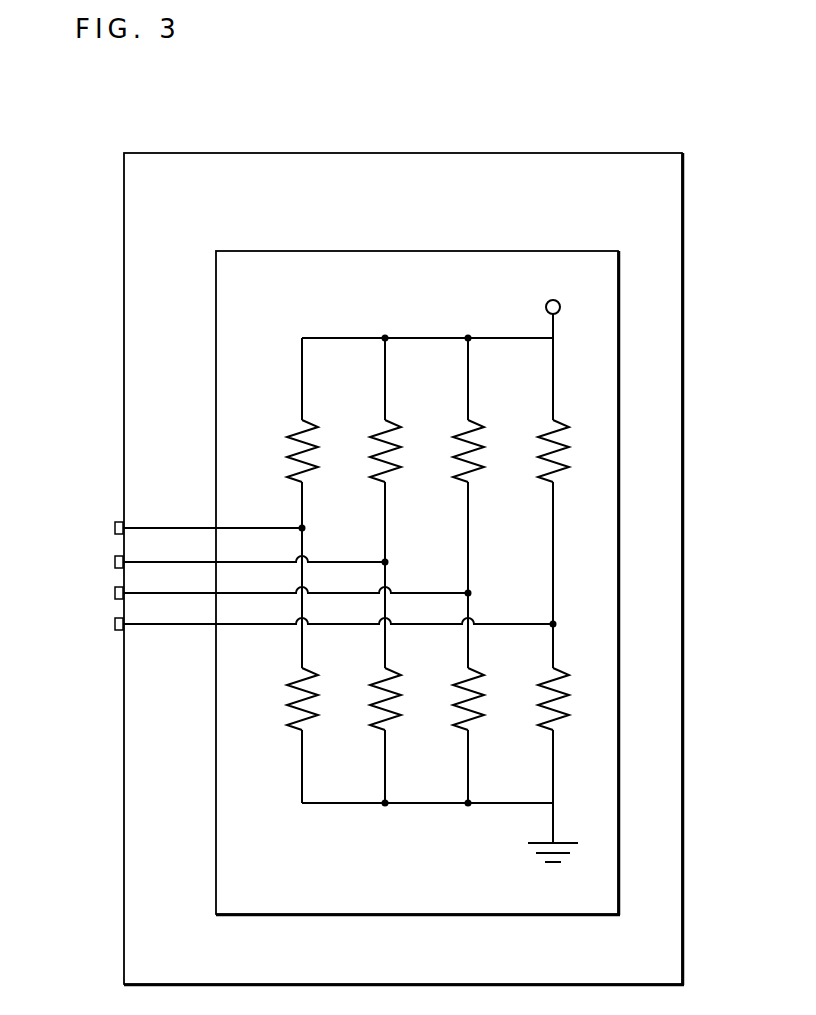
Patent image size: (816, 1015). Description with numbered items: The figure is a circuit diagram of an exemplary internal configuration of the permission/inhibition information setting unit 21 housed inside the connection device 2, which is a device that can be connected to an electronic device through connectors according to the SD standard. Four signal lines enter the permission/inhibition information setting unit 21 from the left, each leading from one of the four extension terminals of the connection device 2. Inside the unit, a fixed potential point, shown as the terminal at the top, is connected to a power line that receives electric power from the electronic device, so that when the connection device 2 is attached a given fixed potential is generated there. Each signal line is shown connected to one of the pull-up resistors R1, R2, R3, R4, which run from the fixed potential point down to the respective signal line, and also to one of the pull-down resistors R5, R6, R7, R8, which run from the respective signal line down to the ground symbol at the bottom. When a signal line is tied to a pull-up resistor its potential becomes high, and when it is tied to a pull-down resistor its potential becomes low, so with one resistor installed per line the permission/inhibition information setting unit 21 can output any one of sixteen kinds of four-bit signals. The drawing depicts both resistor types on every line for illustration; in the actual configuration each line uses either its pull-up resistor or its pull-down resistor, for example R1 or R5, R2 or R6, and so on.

The connection device 2 is at (593, 153).
The permission/inhibition information setting unit 21 is at (447, 251).
The pull-up resistor R1 is at (295, 424).
The pull-up resistor R2 is at (378, 424).
The pull-up resistor R3 is at (461, 424).
The pull-up resistor R4 is at (546, 424).
The pull-down resistor R5 is at (295, 735).
The pull-down resistor R6 is at (378, 735).
The pull-down resistor R7 is at (461, 735).
The pull-down resistor R8 is at (546, 735).